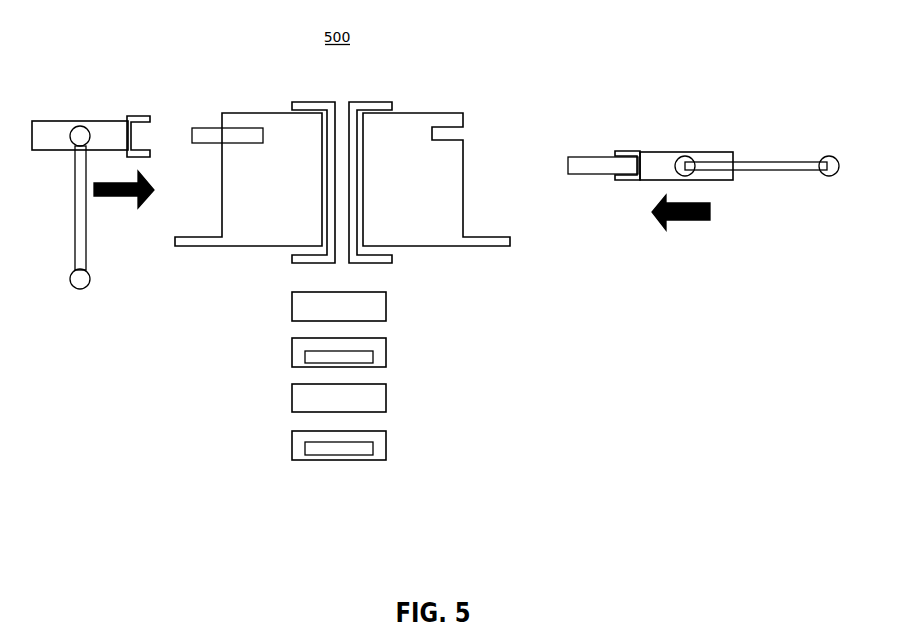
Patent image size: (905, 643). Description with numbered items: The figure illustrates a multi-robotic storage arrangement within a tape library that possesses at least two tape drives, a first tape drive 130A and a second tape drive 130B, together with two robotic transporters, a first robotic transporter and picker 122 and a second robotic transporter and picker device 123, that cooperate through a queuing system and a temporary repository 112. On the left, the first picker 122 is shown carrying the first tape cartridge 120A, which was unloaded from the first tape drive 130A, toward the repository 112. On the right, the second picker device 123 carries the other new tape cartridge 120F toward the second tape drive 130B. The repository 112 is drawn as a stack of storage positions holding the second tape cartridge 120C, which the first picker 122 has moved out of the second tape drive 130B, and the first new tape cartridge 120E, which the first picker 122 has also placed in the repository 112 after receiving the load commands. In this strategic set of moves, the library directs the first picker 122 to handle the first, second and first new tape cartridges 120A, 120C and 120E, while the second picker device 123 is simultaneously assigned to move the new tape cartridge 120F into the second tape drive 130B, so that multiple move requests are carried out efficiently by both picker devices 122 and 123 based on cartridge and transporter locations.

The first robotic transporter and picker 122 is at (110, 120).
The first tape cartridge 120A is at (212, 127).
The first tape drive 130A is at (267, 113).
The second tape drive 130B is at (415, 113).
The new tape cartridge 120F is at (577, 157).
The second robotic transporter and picker device 123 is at (710, 152).
The temporary repository 112 is at (418, 358).
The second tape cartridge 120C is at (315, 351).
The first new tape cartridge 120E is at (313, 442).